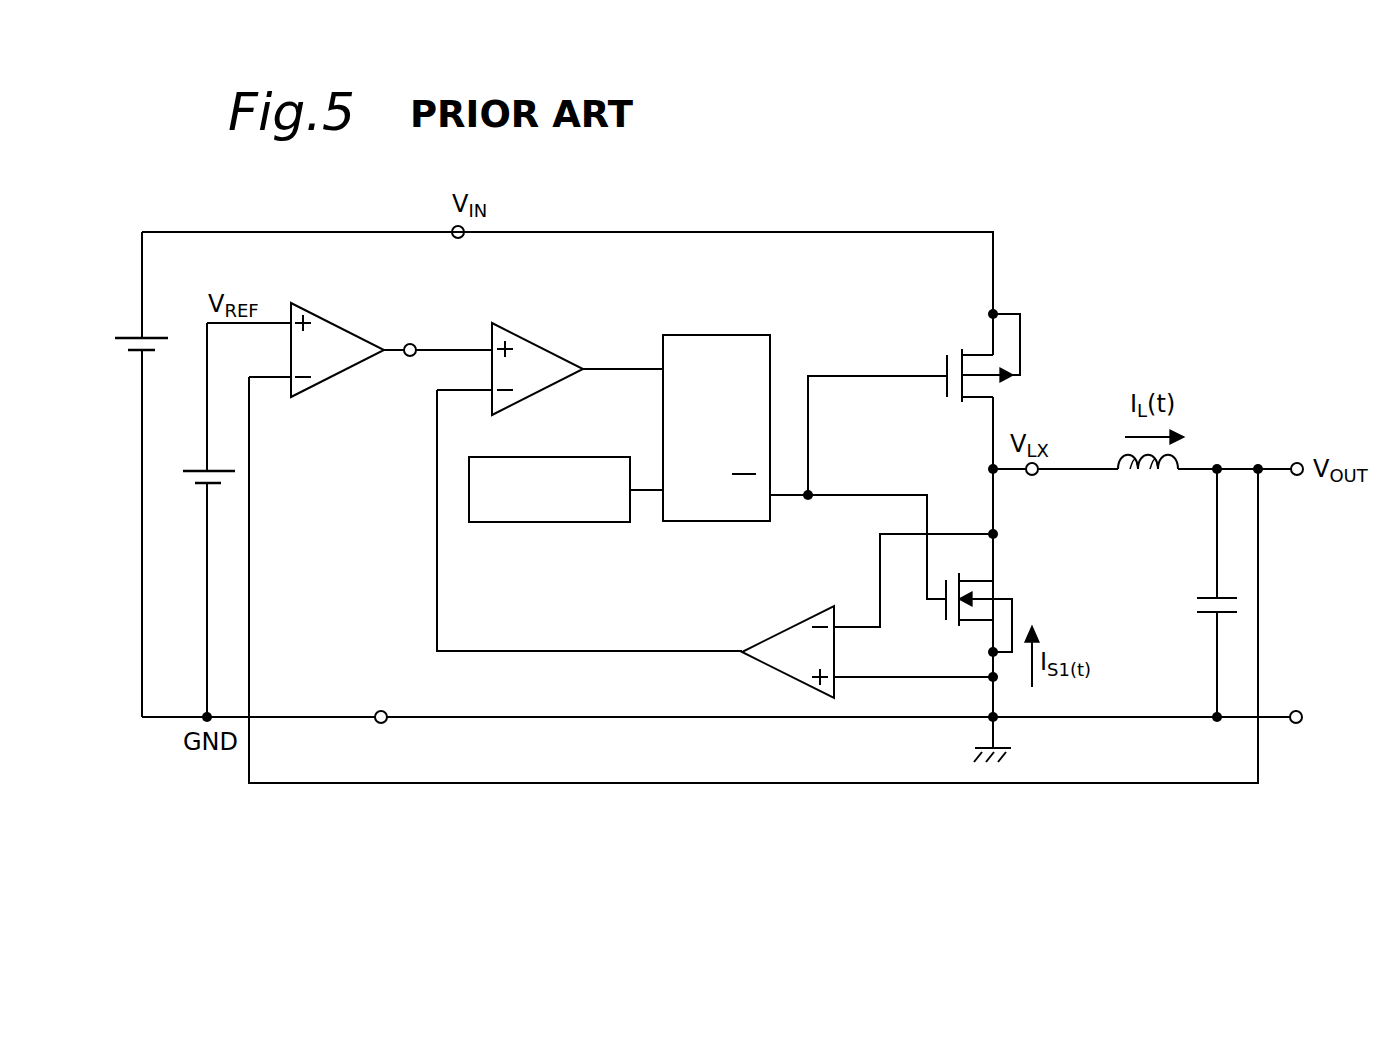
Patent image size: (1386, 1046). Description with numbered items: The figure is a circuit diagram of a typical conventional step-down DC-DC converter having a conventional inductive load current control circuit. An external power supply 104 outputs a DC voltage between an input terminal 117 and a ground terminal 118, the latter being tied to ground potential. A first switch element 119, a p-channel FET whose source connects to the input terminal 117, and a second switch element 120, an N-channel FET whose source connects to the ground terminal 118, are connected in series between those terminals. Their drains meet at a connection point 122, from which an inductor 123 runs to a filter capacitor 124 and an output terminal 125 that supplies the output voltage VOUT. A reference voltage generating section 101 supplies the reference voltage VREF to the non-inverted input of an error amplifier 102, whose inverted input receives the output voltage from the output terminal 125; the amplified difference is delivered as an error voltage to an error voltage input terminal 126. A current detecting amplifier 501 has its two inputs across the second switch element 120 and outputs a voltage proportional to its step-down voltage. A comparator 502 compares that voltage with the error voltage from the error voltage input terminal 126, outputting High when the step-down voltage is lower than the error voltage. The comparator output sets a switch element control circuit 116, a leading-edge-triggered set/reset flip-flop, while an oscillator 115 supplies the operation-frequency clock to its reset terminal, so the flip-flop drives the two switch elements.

The input terminal 117 is at (455, 230).
The external power supply 104 is at (132, 335).
The reference voltage generating section 101 is at (199, 459).
The error amplifier 102 is at (333, 320).
The error voltage input terminal 126 is at (408, 358).
The comparator 502 is at (553, 348).
The switch element control circuit 116 is at (718, 334).
The oscillator 115 is at (578, 524).
The current detecting amplifier 501 is at (800, 618).
The first switch element 119 is at (1000, 376).
The second switch element 120 is at (1012, 590).
The connection point 122 is at (1032, 476).
The inductor 123 is at (1148, 476).
The filter capacitor 124 is at (1198, 607).
The output terminal 125 is at (1296, 462).
The ground terminal 118 is at (381, 711).